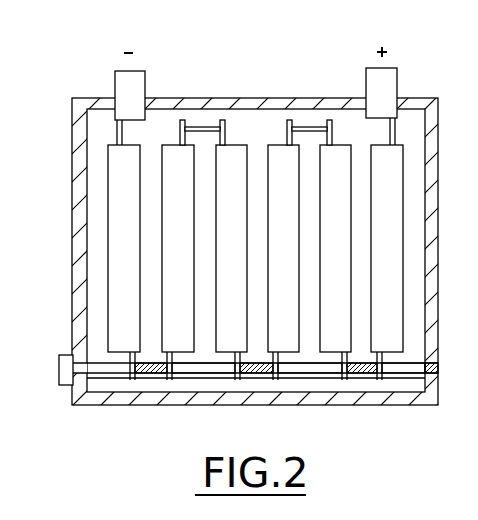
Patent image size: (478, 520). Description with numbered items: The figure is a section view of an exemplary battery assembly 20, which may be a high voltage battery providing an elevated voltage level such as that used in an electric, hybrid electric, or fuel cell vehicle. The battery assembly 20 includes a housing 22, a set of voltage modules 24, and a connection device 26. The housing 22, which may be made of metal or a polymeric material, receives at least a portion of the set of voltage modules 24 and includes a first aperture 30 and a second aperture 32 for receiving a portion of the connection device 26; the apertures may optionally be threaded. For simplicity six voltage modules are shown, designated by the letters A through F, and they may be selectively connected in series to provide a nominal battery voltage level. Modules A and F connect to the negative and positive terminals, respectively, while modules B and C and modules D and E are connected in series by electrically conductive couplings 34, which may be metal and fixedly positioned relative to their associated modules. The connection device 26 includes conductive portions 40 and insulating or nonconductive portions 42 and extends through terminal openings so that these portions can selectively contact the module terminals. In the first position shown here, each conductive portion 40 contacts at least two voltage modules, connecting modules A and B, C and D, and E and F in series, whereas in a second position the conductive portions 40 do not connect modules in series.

The battery assembly 20 is at (94, 50).
The housing 22 is at (72, 130).
The set of voltage modules 24 is at (105, 220).
The connection device 26 is at (41, 372).
The first aperture 30 is at (70, 350).
The second aperture 32 is at (440, 353).
The electrically conductive couplings 34 is at (304, 122).
The conductive portions 40 is at (150, 377).
The nonconductive portions 42 is at (207, 377).